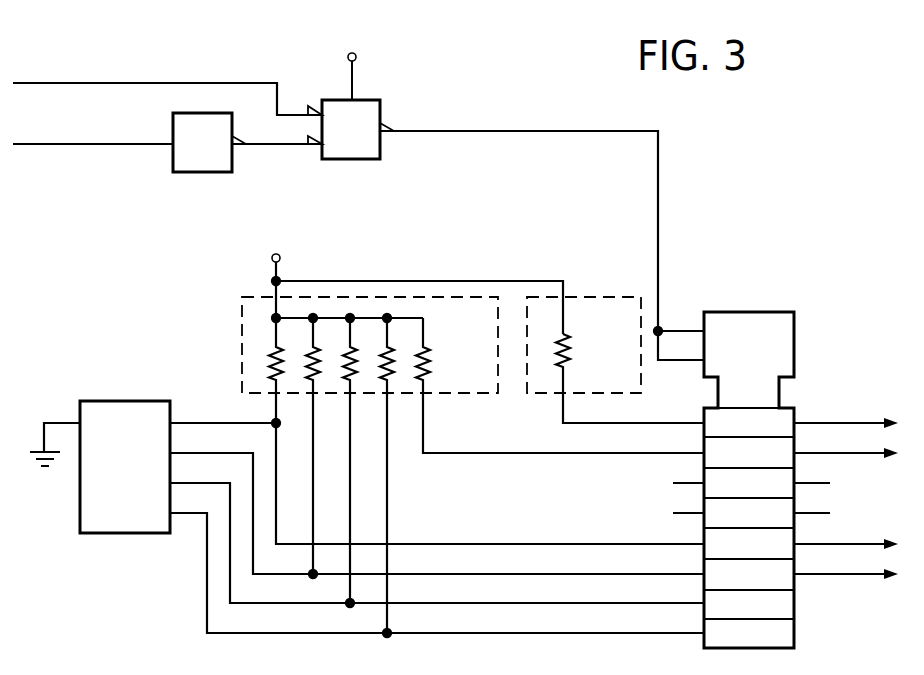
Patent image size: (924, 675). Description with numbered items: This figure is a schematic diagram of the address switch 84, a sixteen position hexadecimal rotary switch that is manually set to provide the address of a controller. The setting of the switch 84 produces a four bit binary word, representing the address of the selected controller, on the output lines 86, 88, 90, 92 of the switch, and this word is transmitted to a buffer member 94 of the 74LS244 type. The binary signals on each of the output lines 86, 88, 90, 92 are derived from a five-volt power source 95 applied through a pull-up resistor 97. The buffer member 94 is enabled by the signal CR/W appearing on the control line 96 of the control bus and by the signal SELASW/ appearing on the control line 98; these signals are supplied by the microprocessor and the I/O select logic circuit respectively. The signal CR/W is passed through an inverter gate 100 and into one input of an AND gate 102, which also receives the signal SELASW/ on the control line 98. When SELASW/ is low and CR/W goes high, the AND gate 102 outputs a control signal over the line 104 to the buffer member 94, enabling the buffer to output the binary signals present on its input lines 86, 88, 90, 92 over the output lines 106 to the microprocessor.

The address switch 84 is at (120, 405).
The output line 86 is at (215, 423).
The output line 88 is at (217, 453).
The output line 90 is at (208, 483).
The output line 92 is at (205, 560).
The buffer member 94 is at (794, 338).
The 5-volt power source 95 is at (282, 258).
The control line 96 is at (110, 146).
The pull-up resistor 97 is at (431, 353).
The control line 98 is at (175, 83).
The inverter gate 100 is at (187, 172).
The AND gate 102 is at (352, 160).
The line 104 is at (540, 131).
The output lines 106 is at (833, 423).